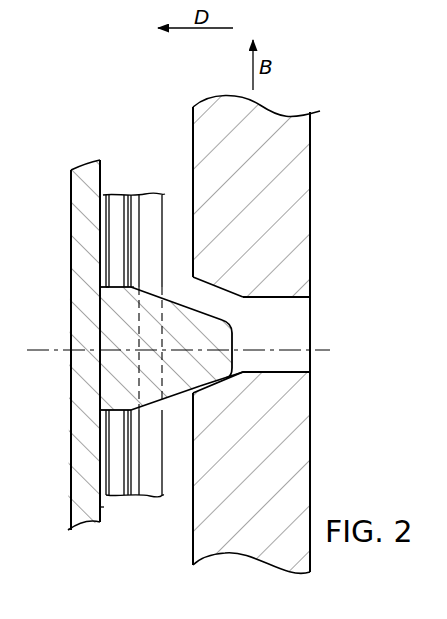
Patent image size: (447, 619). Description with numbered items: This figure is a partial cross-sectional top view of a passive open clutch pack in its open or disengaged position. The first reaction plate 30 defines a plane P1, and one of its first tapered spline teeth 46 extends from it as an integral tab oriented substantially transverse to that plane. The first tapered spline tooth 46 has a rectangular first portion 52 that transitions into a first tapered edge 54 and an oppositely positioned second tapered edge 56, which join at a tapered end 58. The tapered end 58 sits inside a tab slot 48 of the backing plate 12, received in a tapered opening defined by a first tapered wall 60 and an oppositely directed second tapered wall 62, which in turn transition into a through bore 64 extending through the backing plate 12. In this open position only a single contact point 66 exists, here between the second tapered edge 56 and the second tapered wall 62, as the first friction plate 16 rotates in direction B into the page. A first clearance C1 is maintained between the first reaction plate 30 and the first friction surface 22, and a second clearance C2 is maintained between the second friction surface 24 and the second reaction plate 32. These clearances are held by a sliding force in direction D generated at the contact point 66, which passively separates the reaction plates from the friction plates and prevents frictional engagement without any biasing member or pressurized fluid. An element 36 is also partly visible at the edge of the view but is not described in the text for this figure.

The backing plate 12 is at (300, 135).
The first friction plate 16 is at (116, 195).
The first friction surface 22 is at (107, 223).
The second friction surface 24 is at (133, 223).
The first reaction plate 30 is at (82, 180).
The second reaction plate 32 is at (152, 200).
The spring 36 is at (442, 178).
The first tapered spline tooth 46 is at (120, 403).
The tab slot 48 is at (297, 332).
The rectangular first portion 52 is at (120, 296).
The first tapered edge 54 is at (173, 299).
The second tapered edge 56 is at (175, 396).
The tapered end 58 is at (218, 358).
The first tapered wall 60 is at (222, 294).
The second tapered wall 62 is at (240, 376).
The through bore 64 is at (275, 297).
The contact point 66 is at (207, 382).
The first clearance C1 is at (108, 188).
The second clearance C2 is at (133, 188).
The plane P1 is at (106, 508).